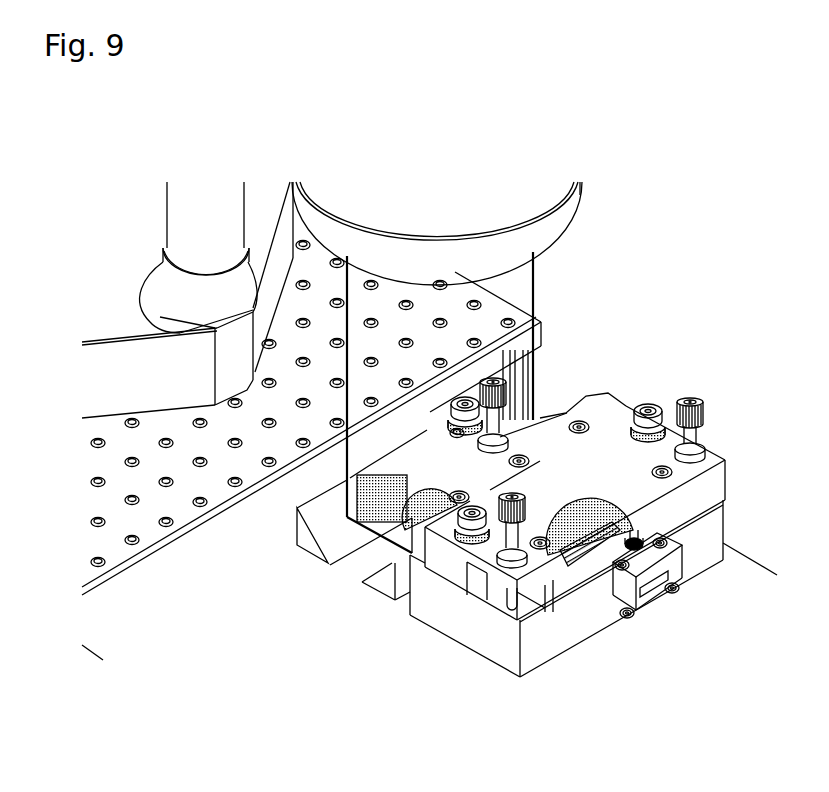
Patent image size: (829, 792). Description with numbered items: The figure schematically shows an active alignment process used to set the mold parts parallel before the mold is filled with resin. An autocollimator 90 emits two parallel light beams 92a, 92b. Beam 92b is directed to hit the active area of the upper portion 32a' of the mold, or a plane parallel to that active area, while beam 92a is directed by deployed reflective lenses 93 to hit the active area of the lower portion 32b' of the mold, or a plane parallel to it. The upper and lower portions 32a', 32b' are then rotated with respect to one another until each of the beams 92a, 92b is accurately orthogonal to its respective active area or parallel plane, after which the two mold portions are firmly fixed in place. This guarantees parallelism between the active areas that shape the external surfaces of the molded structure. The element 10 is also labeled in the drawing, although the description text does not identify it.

The autocollimator 90 is at (560, 217).
The parallel light beam 92a is at (350, 368).
The parallel light beam 92b is at (536, 385).
The reflective lenses 93 is at (382, 595).
The upper portion 32a' is at (576, 478).
The lower portion 32b' is at (566, 608).
The sample holder block 10 is at (597, 560).